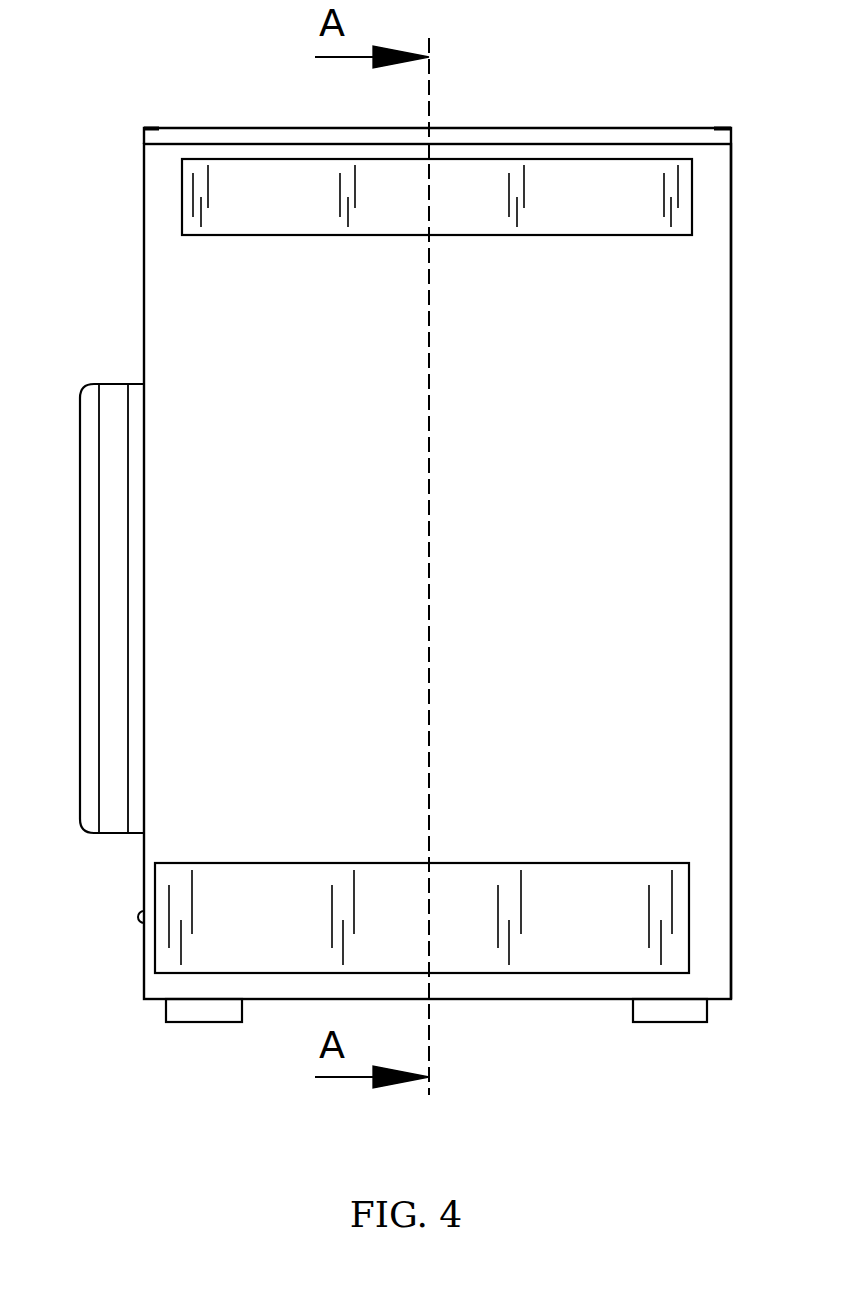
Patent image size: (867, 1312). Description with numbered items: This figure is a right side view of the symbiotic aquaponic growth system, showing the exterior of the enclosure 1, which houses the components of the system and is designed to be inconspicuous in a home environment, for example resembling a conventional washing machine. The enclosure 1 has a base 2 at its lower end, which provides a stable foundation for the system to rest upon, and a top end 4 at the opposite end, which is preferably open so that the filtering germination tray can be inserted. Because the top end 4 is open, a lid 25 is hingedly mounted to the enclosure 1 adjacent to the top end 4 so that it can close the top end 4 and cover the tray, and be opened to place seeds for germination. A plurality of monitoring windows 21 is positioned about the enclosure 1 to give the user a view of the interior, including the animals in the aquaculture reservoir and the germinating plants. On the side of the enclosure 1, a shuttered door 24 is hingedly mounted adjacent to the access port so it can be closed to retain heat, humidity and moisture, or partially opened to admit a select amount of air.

The enclosure 1 is at (112, 257).
The base 2 is at (732, 1000).
The top end 4 is at (732, 144).
The plurality of monitoring windows 21 is at (423, 566).
The shuttered door 24 is at (91, 397).
The lid 25 is at (270, 133).